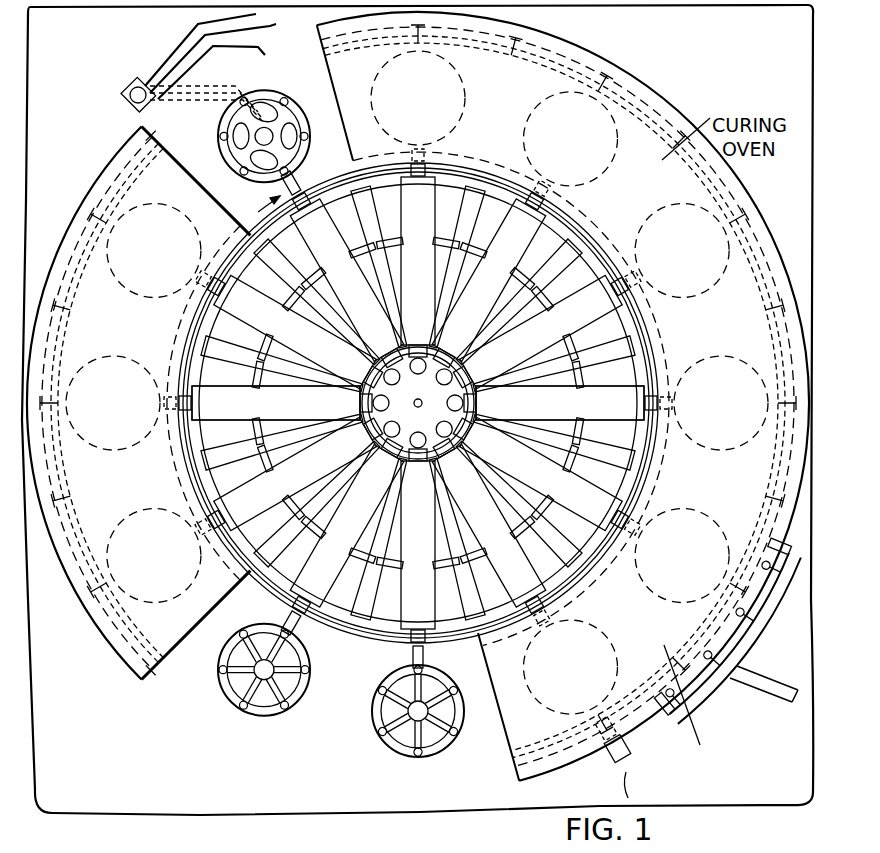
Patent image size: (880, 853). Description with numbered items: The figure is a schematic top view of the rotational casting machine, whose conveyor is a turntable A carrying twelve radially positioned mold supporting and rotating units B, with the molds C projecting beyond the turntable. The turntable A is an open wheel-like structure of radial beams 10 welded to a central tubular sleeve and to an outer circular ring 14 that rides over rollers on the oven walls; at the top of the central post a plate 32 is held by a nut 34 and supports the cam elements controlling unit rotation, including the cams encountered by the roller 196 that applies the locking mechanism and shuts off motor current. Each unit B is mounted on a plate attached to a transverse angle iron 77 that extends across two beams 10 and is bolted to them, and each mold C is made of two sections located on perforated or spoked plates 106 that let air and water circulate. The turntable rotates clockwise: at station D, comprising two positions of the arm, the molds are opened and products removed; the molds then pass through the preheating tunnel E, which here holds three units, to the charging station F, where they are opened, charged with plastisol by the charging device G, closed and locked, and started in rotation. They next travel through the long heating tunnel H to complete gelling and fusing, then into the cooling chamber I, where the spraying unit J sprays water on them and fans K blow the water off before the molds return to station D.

The radial beams 10 is at (381, 598).
The outer circular ring 14 is at (394, 628).
The plate 32 is at (445, 363).
The nut 34 is at (428, 392).
The transverse angle iron 77 is at (308, 552).
The plates 106 is at (318, 100).
The roller 196 is at (418, 403).
The turntable A is at (418, 412).
The mold supporting and rotating units B is at (428, 238).
The molds C is at (528, 110).
The station D is at (410, 770).
The heating tunnel E is at (128, 653).
The charging station F is at (272, 103).
The charging device G is at (240, 52).
The heating tunnel H is at (636, 92).
The cooling chamber I is at (699, 549).
The spraying unit J is at (728, 682).
The fans K is at (636, 763).